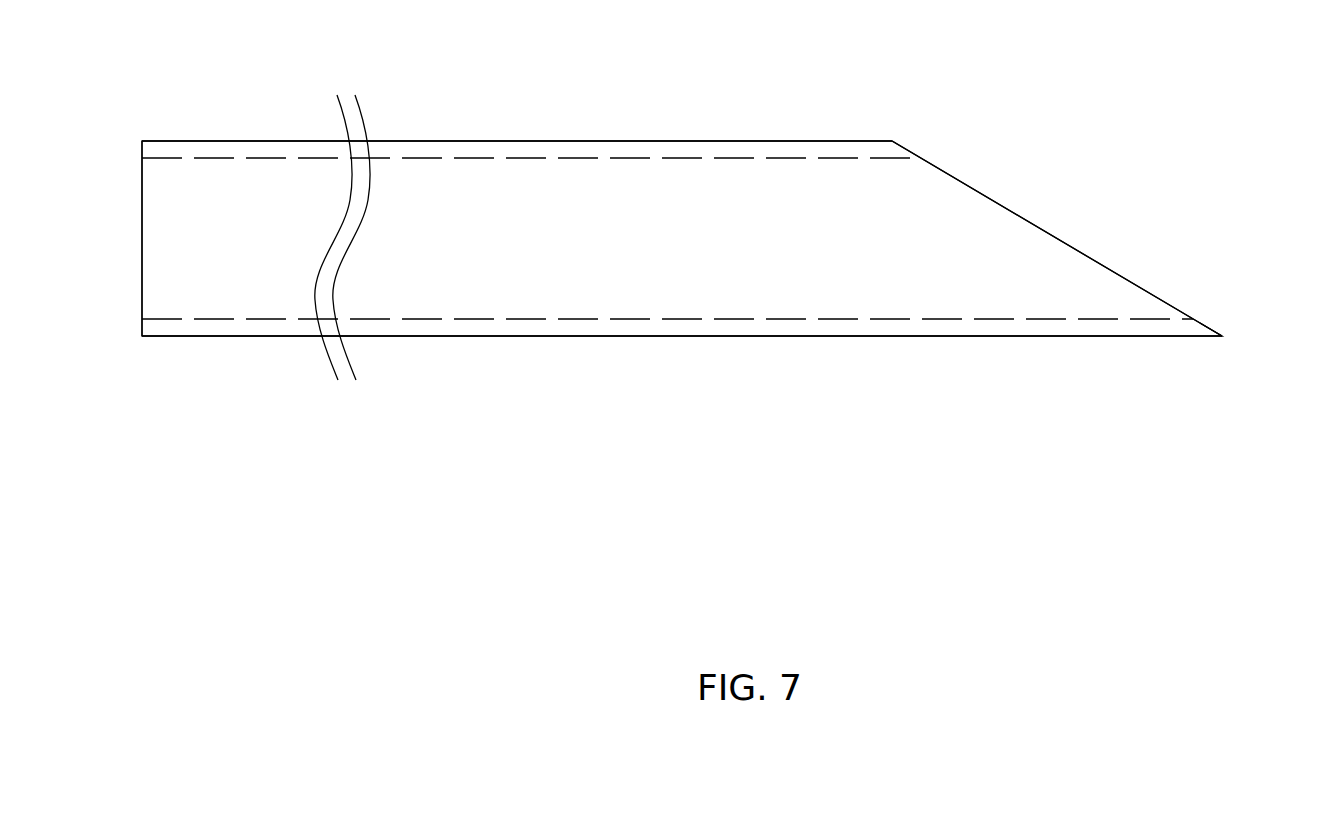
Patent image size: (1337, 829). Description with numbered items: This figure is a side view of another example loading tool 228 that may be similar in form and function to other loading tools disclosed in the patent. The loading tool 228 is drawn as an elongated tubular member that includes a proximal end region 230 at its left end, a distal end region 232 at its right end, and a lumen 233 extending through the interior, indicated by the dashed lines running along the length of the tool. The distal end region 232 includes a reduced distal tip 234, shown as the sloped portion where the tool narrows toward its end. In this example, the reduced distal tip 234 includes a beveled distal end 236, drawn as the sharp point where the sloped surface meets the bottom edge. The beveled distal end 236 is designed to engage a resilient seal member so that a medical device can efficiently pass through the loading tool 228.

The loading tool 228 is at (663, 90).
The proximal end region 230 is at (245, 141).
The distal end region 232 is at (537, 141).
The lumen 233 is at (892, 282).
The reduced distal tip 234 is at (1058, 237).
The beveled distal end 236 is at (1210, 323).